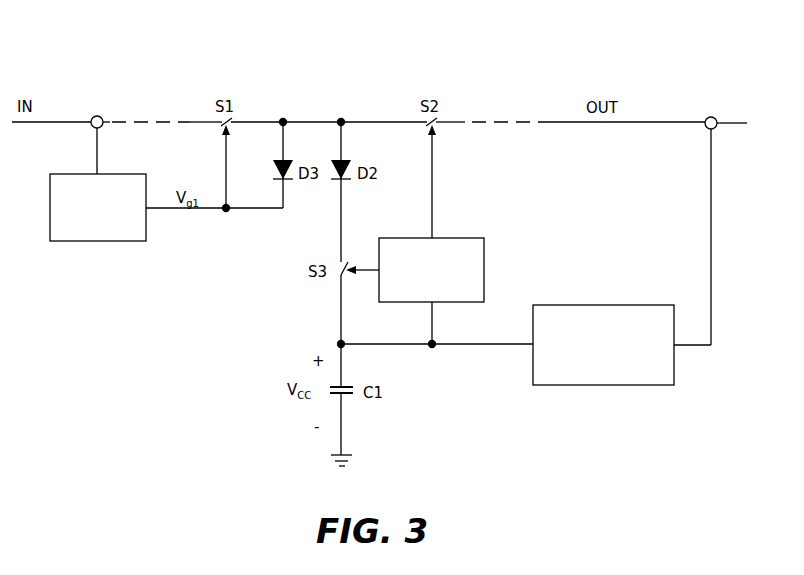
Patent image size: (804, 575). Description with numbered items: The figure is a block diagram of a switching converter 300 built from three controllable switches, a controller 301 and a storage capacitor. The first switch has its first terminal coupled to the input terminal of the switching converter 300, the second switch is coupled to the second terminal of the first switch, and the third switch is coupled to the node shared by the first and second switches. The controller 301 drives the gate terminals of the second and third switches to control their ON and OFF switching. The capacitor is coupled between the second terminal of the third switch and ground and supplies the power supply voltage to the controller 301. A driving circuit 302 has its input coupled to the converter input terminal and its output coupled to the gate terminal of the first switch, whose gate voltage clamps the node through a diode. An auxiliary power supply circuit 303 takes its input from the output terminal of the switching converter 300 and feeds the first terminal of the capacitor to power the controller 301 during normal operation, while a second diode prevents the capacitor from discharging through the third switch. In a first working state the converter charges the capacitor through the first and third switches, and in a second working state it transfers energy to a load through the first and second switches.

The switching converter 300 is at (591, 73).
The controller 301 is at (485, 280).
The driving circuit 302 is at (50, 222).
The auxiliary power supply circuit 303 is at (559, 386).